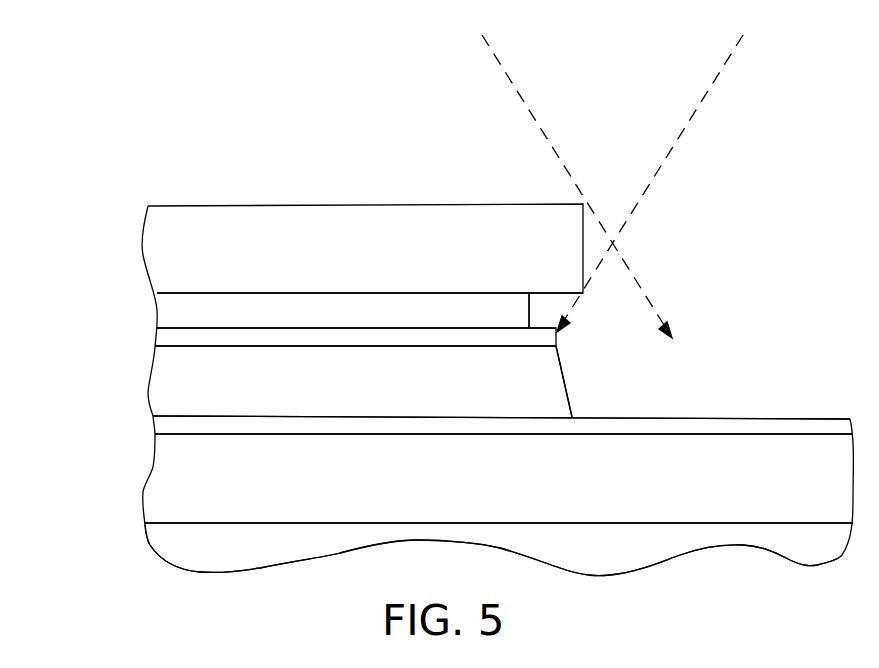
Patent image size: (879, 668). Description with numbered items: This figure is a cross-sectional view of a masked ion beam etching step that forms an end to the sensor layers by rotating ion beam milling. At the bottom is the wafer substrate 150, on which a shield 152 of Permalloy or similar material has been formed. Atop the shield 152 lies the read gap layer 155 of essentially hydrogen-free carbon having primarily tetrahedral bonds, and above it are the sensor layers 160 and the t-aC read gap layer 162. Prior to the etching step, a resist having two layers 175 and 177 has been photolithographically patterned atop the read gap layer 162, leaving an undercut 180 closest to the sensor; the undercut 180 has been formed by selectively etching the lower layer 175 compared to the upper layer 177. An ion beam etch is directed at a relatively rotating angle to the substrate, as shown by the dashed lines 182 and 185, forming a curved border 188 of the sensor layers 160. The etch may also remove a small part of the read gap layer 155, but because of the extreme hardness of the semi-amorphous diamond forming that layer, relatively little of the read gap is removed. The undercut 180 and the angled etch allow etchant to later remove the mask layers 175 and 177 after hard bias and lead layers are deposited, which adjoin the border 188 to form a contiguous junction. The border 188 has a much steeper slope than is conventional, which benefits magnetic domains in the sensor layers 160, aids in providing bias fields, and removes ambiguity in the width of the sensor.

The wafer substrate 150 is at (148, 545).
The shield 152 is at (145, 490).
The read gap layer 155 is at (153, 430).
The sensor layers 160 is at (148, 375).
The t-aC read gap layer 162 is at (155, 345).
The resist layer 175 is at (157, 310).
The resist layer 177 is at (143, 250).
The undercut 180 is at (528, 313).
The ion beam line 182 is at (540, 135).
The ion beam line 185 is at (682, 137).
The curved border 188 is at (565, 382).